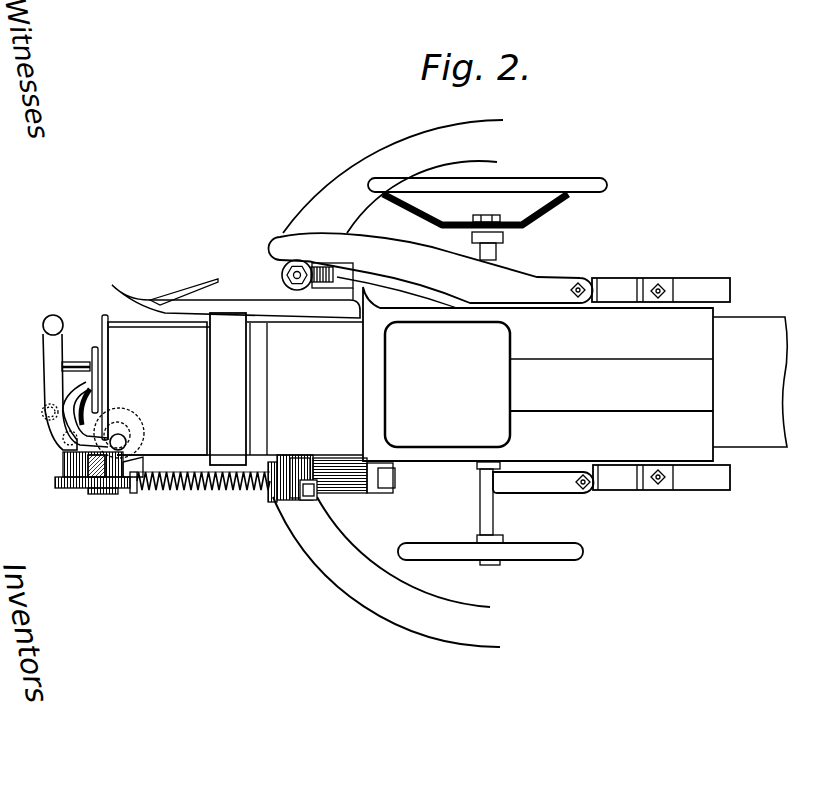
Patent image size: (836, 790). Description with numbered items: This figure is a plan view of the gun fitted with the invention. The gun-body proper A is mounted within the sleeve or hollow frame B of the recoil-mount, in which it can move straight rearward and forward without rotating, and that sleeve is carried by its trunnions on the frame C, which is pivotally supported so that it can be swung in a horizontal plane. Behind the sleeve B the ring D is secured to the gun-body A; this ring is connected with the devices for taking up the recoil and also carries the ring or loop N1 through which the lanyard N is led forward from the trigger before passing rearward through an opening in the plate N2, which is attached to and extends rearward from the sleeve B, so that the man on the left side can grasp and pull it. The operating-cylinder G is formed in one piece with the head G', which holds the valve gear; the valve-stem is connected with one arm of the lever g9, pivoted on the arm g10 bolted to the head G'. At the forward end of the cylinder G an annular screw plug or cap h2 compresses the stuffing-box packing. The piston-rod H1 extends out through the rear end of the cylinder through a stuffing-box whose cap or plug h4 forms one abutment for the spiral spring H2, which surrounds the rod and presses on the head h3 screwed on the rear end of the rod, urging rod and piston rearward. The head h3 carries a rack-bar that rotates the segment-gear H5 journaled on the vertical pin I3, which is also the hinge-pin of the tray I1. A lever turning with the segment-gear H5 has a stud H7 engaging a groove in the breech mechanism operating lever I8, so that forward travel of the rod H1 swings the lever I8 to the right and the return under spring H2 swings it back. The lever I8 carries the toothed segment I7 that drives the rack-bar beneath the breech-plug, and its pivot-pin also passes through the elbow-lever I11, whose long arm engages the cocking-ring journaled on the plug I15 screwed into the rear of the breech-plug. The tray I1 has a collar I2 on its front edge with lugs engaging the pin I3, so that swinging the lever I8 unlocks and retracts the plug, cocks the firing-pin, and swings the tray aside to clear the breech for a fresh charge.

The gun-body proper A is at (447, 386).
The sleeve or hollow frame B is at (380, 389).
The frame C is at (614, 291).
The ring D is at (228, 389).
The operating-cylinder G is at (353, 460).
The head G' is at (262, 497).
The lever g9 is at (317, 491).
The arm g10 is at (298, 457).
The piston-rod H1 is at (194, 490).
The spiral spring H2 is at (181, 470).
The segment-gear H5 is at (112, 491).
The stud H7 is at (68, 423).
The annular screw plug or cap h2 is at (391, 494).
The head h3 is at (133, 493).
The cap or plug of the stuffing-box h4 is at (275, 457).
The tray I1 is at (77, 362).
The collar I2 is at (102, 366).
The vertical pin I3 is at (120, 440).
The toothed segment I7 is at (77, 462).
The breech mechanism operating lever I8 is at (46, 368).
The elbow-lever I11 is at (67, 424).
The plug I15 is at (95, 397).
The cord or lanyard N is at (204, 290).
The ring or loop N1 is at (208, 325).
The plate N2 is at (238, 298).